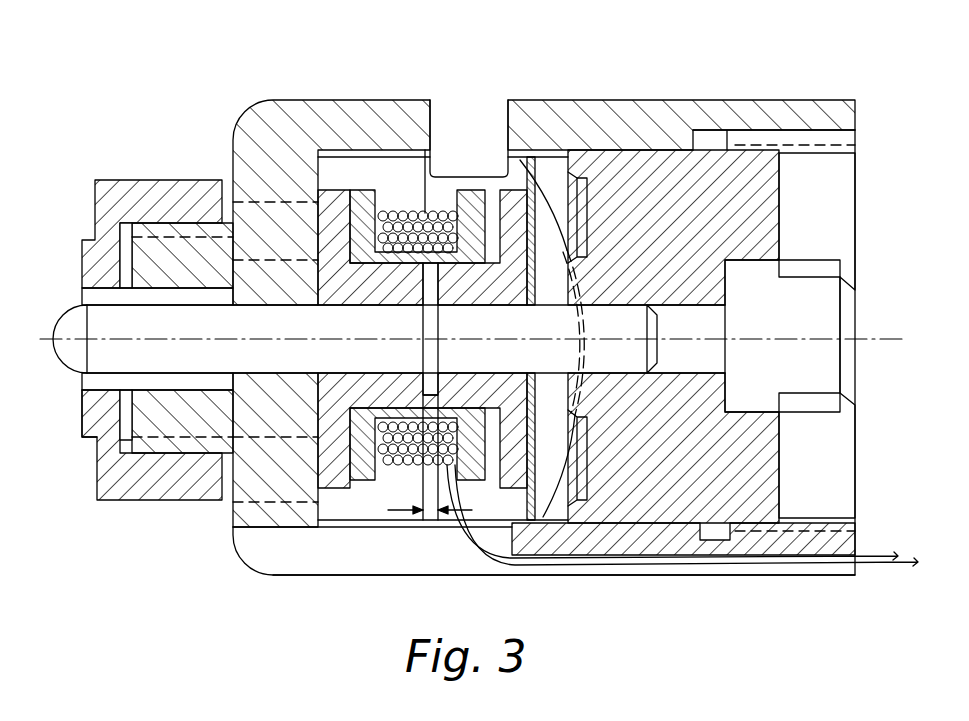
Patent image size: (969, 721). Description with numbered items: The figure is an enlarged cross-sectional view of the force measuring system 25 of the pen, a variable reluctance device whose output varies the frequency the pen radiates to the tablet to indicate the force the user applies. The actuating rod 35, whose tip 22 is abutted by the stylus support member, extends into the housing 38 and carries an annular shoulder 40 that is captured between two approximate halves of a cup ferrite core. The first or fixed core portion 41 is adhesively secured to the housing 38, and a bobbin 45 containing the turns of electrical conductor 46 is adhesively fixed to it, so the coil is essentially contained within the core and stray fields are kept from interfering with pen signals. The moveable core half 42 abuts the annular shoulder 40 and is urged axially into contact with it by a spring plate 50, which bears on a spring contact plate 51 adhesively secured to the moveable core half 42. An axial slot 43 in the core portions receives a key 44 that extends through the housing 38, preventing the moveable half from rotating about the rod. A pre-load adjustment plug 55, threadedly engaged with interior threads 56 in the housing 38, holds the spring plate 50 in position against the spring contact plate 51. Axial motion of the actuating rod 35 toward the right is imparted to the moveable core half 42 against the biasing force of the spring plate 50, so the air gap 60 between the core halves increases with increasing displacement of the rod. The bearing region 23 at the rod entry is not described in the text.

The tip 22 is at (62, 318).
The bearing 23 is at (105, 323).
The force measuring system 25 is at (290, 580).
The actuating rod 35 is at (142, 358).
The housing 38 is at (295, 100).
The annular shoulder 40 is at (517, 293).
The fixed core portion 41 is at (330, 190).
The moveable core half 42 is at (547, 205).
The axial slot 43 is at (518, 162).
The key 44 is at (488, 118).
The bobbin 45 is at (392, 213).
The electrical conductor 46 is at (425, 150).
The spring plate 50 is at (535, 510).
The spring contact plate 51 is at (533, 490).
The pre-load adjustment plug 55 is at (717, 163).
The interior threads 56 is at (836, 140).
The air gap 60 is at (400, 515).